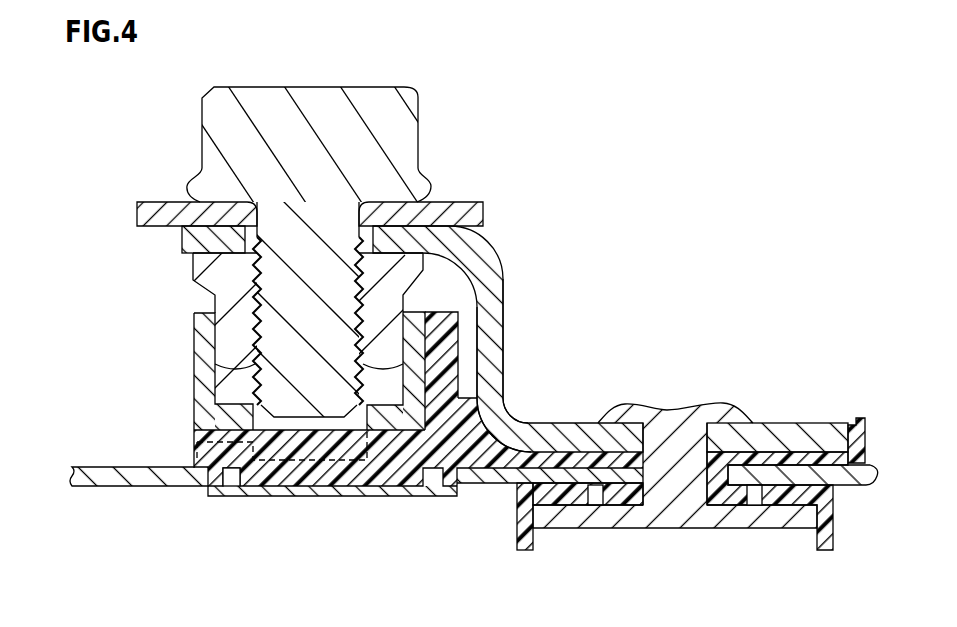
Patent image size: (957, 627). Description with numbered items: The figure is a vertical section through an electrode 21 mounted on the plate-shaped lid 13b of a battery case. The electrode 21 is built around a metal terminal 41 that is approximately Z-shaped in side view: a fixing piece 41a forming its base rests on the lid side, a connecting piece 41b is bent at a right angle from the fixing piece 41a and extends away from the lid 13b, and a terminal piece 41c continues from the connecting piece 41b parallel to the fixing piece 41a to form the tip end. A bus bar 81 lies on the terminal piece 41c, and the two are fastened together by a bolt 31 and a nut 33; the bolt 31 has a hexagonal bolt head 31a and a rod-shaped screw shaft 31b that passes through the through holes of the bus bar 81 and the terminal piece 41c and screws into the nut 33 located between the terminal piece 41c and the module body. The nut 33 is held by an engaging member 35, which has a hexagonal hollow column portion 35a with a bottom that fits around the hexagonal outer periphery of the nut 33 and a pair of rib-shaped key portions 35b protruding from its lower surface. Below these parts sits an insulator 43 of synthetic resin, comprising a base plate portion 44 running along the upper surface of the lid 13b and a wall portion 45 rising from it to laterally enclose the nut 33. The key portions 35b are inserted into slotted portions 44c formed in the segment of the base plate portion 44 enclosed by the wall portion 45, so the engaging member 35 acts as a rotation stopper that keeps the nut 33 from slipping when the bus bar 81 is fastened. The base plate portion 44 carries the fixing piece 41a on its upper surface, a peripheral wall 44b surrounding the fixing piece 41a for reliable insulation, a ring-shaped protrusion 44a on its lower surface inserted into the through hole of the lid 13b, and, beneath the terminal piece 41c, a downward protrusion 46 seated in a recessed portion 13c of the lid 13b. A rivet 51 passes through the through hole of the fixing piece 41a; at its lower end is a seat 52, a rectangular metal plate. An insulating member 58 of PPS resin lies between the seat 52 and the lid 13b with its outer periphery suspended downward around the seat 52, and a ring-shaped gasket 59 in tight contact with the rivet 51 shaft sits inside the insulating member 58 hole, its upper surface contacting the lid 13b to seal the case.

The electrode 21 is at (508, 339).
The bolt 31 is at (328, 250).
The bolt head 31a is at (372, 140).
The screw shaft 31b is at (333, 295).
The nut 33 is at (208, 268).
The engaging member 35 is at (254, 390).
The hollow column portion 35a is at (203, 363).
The key portion 35b is at (245, 444).
The metal terminal 41 is at (508, 339).
The fixing piece 41a is at (797, 430).
The connecting piece 41b is at (490, 358).
The terminal piece 41c is at (192, 240).
The insulator 43 is at (472, 403).
The base plate portion 44 is at (583, 458).
The ring-shaped protrusion 44a is at (717, 477).
The peripheral wall 44b is at (856, 420).
The slotted portion 44c is at (203, 455).
The wall portion 45 is at (437, 333).
The protrusion 46 is at (287, 473).
The rivet 51 is at (675, 437).
The seat 52 is at (590, 520).
The insulating member 58 is at (527, 550).
The gasket 59 is at (625, 497).
The bus bar 81 is at (160, 203).
The lid 13b is at (135, 479).
The recessed portion 13c is at (248, 492).